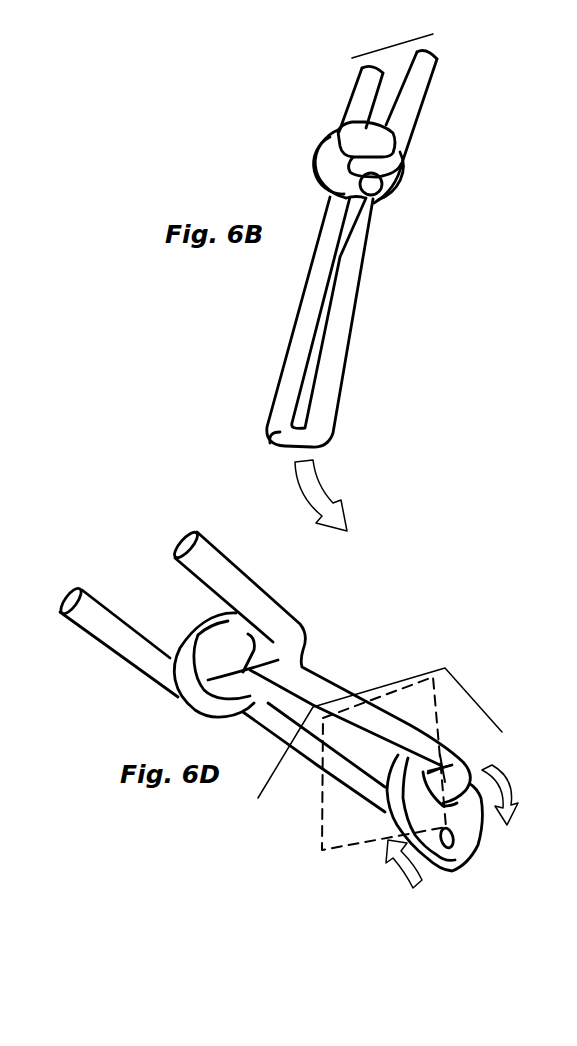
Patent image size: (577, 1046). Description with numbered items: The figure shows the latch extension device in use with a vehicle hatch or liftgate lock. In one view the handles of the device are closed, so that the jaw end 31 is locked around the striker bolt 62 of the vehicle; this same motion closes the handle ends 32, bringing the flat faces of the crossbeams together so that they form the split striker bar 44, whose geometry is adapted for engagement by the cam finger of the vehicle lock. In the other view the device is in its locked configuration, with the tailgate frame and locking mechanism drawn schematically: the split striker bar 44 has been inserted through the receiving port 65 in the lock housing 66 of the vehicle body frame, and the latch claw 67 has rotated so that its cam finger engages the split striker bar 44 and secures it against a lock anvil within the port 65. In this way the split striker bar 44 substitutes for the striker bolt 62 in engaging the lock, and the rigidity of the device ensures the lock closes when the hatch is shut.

In FIG. 6B, the jaw end 31 is at (305, 151).
In FIG. 6B, the handle ends 32 is at (370, 458).
In FIG. 6B, the split striker bar 44 is at (270, 446).
In FIG. 6D, the split striker bar 44 is at (472, 768).
In FIG. 6B, the striker bolt 62 is at (425, 129).
In FIG. 6D, the port 65 is at (438, 727).
In FIG. 6D, the lock housing 66 is at (430, 669).
In FIG. 6D, the latch claw 67 is at (470, 857).